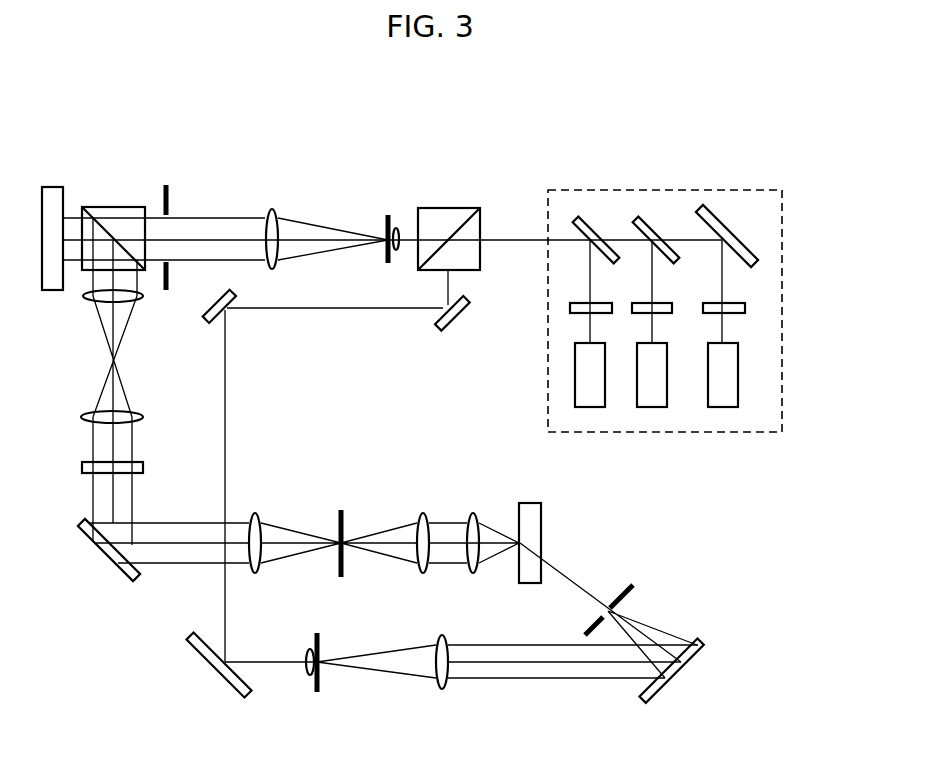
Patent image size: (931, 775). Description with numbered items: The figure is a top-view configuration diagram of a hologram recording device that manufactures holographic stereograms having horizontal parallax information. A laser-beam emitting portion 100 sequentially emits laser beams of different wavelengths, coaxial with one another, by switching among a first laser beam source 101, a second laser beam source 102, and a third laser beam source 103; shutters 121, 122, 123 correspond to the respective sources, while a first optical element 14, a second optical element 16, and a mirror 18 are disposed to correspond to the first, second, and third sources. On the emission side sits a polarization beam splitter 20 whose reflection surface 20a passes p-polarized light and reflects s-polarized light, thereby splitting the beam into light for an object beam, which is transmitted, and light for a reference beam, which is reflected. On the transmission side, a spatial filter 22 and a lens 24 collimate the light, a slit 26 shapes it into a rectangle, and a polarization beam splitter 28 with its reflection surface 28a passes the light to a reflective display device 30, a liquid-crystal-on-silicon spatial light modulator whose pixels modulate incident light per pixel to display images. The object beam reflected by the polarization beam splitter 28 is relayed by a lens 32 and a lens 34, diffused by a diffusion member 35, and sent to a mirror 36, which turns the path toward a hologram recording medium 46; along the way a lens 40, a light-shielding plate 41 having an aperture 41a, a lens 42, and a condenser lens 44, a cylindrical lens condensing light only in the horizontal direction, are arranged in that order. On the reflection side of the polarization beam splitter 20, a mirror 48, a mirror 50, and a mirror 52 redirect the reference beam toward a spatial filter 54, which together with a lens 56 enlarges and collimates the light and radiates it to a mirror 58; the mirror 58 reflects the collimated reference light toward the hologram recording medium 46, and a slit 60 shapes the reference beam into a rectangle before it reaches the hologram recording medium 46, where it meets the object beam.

The laser-beam emitting portion 100 is at (694, 189).
The first laser beam source 101 is at (588, 407).
The second laser beam source 102 is at (650, 407).
The third laser beam source 103 is at (721, 407).
The shutter 121 is at (570, 304).
The shutter 122 is at (665, 303).
The shutter 123 is at (746, 302).
The first optical element 14 is at (590, 219).
The second optical element 16 is at (650, 219).
The mirror 18 is at (725, 213).
The polarization beam splitter 20 is at (437, 208).
The reflection surface 20a is at (462, 208).
The spatial filter 22 is at (393, 210).
The lens 24 is at (272, 208).
The slit 26 is at (169, 193).
The polarization beam splitter 28 is at (126, 207).
The reflection surface 28a is at (98, 207).
The reflective display device 30 is at (52, 187).
The lens 32 is at (137, 302).
The lens 34 is at (137, 408).
The diffusion member 35 is at (143, 467).
The mirror 36 is at (112, 568).
The lens 40 is at (255, 513).
The light-shielding plate 41 is at (344, 515).
The aperture 41a is at (345, 542).
The lens 42 is at (423, 513).
The condenser lens 44 is at (473, 513).
The hologram recording medium 46 is at (541, 516).
The mirror 48 is at (456, 325).
The mirror 50 is at (233, 297).
The mirror 52 is at (226, 688).
The spatial filter 54 is at (314, 695).
The lens 56 is at (444, 690).
The mirror 58 is at (678, 678).
The slit 60 is at (629, 591).